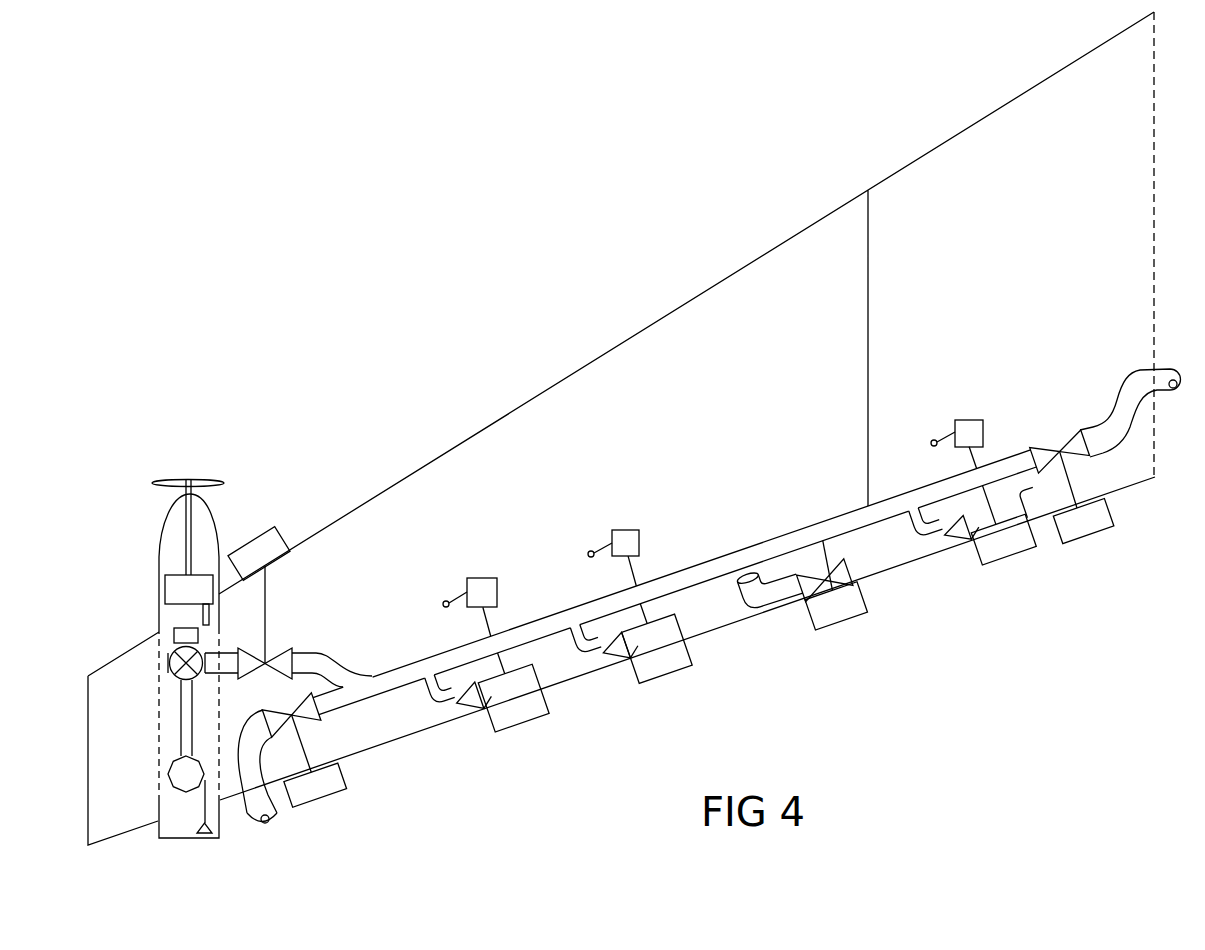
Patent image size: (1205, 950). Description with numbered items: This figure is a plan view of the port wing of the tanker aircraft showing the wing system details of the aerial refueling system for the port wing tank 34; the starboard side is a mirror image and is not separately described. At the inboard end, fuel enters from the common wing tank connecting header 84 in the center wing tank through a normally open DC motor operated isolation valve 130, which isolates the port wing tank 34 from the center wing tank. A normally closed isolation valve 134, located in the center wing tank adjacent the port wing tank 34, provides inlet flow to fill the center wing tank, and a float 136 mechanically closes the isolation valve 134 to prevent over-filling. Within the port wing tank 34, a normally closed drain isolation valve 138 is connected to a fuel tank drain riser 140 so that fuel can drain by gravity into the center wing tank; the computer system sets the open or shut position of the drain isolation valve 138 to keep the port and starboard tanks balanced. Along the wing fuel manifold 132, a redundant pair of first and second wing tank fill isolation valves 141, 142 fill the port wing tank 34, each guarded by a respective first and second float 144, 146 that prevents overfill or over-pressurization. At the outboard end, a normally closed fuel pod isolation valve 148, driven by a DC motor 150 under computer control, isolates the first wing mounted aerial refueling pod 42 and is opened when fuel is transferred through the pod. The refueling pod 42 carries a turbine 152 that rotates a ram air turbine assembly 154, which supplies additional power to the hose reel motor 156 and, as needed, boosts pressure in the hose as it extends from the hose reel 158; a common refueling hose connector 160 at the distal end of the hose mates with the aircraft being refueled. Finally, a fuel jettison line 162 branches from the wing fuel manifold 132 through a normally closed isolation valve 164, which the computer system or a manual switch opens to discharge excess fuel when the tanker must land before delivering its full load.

The port wing tank 34 is at (618, 469).
The first wing mounted aerial refueling pod 42 is at (168, 546).
The common wing tank connecting header 84 is at (1133, 382).
The isolation valve 130 is at (1042, 450).
The wing fuel manifold 132 is at (750, 548).
The isolation valve 134 is at (966, 540).
The float 136 is at (962, 418).
The drain isolation valve 138 is at (803, 598).
The fuel tank drain riser 140 is at (756, 606).
The first wing tank fill isolation valve 141 is at (630, 658).
The second wing tank fill isolation valve 142 is at (485, 708).
The first float 144 is at (621, 530).
The second float 146 is at (477, 578).
The fuel pod isolation valve 148 is at (282, 653).
The DC motor 150 is at (275, 527).
The turbine 152 is at (205, 480).
The ram air turbine assembly 154 is at (166, 594).
The hose reel motor 156 is at (174, 652).
The hose reel 158 is at (178, 793).
The common refueling hose connector 160 is at (203, 835).
The fuel jettison line 162 is at (252, 815).
The isolation valve 164 is at (322, 718).